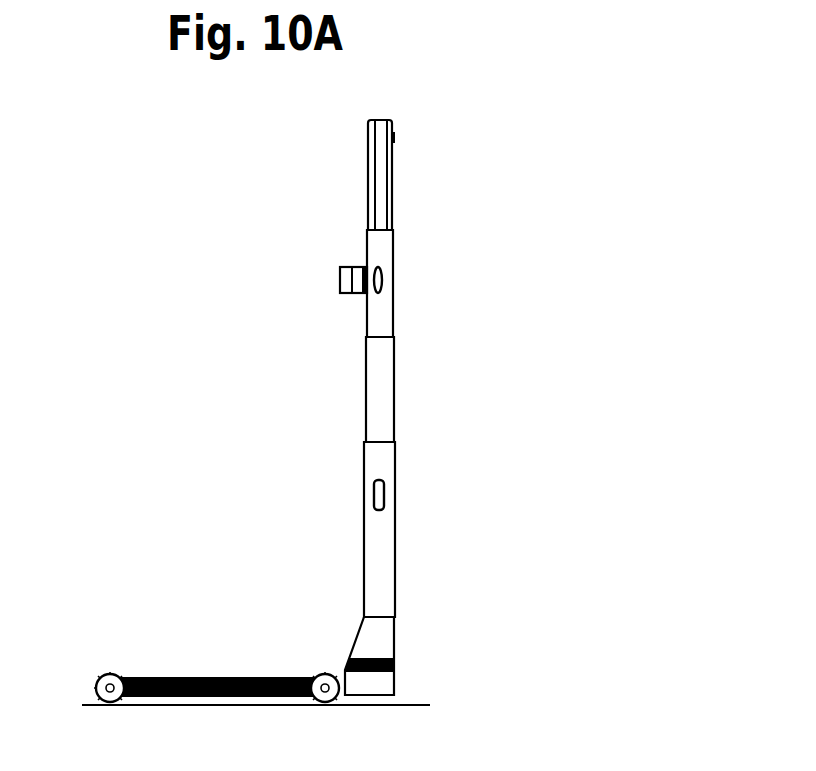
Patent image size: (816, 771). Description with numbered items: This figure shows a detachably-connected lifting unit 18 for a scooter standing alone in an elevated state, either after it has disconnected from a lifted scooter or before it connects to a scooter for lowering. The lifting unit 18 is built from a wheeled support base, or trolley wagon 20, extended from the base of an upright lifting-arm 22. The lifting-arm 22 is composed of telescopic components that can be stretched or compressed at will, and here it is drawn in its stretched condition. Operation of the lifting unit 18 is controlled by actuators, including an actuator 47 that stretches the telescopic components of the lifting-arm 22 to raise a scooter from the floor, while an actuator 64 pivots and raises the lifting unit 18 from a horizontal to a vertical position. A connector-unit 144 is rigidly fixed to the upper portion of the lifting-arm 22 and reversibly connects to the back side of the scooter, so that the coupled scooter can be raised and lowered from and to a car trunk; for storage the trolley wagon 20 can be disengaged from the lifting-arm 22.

The lifting unit 18 is at (183, 394).
The support base trolley wagon 20 is at (245, 677).
The lifting-arm 22 is at (378, 572).
The actuator 47 is at (383, 485).
The actuator 64 is at (383, 270).
The connector-unit 144 is at (338, 272).